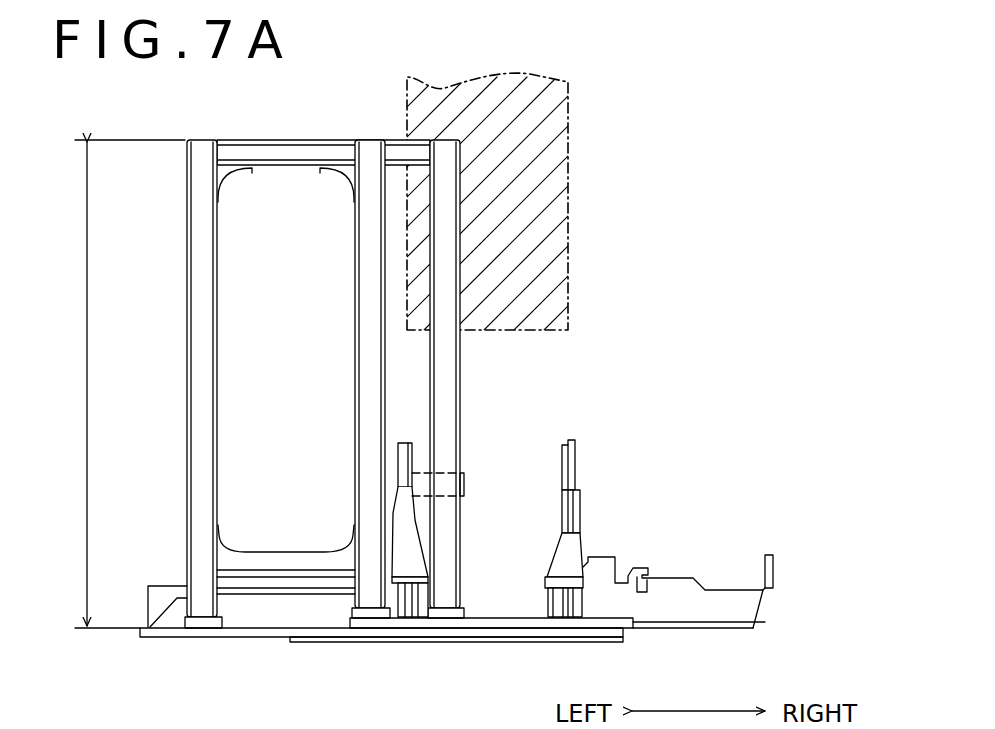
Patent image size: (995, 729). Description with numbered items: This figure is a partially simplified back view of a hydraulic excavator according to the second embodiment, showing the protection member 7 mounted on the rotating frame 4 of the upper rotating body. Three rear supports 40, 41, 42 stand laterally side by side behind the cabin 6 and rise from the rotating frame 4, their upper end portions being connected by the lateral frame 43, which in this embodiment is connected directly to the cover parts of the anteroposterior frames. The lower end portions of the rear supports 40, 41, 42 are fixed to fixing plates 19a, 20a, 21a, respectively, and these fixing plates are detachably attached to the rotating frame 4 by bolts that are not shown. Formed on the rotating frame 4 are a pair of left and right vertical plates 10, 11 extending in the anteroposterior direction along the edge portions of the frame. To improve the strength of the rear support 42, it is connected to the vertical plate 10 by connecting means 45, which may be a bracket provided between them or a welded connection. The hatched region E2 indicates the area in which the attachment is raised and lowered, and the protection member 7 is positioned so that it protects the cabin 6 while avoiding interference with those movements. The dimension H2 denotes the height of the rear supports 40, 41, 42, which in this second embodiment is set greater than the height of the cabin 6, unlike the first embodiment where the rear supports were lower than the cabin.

The protection member 7 is at (324, 344).
The lateral frame 43 is at (395, 152).
The rear support 40 is at (205, 444).
The rear support 41 is at (372, 444).
The rear support 42 is at (445, 393).
The cabin 6 is at (238, 322).
The vertical plate 10 is at (405, 440).
The vertical plate 11 is at (578, 470).
The connecting means 45 is at (466, 480).
The fixing plate 19a is at (205, 623).
The fixing plate 20a is at (368, 617).
The fixing plate 21a is at (445, 617).
The rotating frame 4 is at (720, 630).
The area where the attachment is raised and lowered E2 is at (568, 190).
The height of rear supports H2 is at (112, 384).